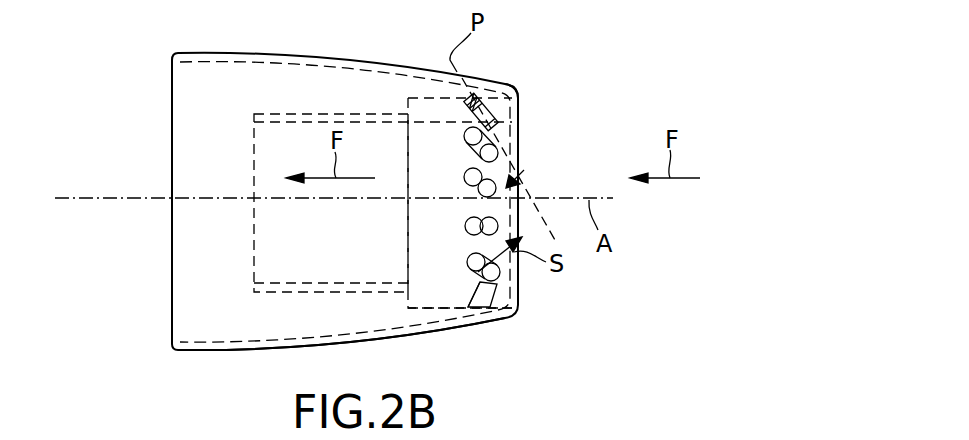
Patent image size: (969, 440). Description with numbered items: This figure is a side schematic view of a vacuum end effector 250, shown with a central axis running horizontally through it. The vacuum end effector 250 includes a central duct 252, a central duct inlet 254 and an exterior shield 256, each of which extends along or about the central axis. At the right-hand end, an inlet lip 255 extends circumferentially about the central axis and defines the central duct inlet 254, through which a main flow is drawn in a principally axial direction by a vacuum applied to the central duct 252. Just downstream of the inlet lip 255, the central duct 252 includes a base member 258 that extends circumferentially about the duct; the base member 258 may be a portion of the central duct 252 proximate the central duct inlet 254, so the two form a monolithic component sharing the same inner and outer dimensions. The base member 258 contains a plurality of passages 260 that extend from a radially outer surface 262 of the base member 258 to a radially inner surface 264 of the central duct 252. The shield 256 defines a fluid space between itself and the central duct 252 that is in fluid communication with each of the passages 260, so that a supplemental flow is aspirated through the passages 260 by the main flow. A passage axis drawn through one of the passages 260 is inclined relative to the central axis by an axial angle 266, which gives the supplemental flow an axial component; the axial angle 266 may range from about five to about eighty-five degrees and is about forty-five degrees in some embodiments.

The vacuum end effector 250 is at (123, 96).
The central duct 252 is at (254, 230).
The central duct inlet 254 is at (552, 119).
The inlet lip 255 is at (525, 100).
The shield 256 is at (205, 350).
The base member 258 is at (418, 98).
The plurality of passages 260 is at (478, 101).
The radially outer surface 262 is at (427, 303).
The radially inner surface 264 is at (453, 280).
The axial angle 266 is at (520, 186).